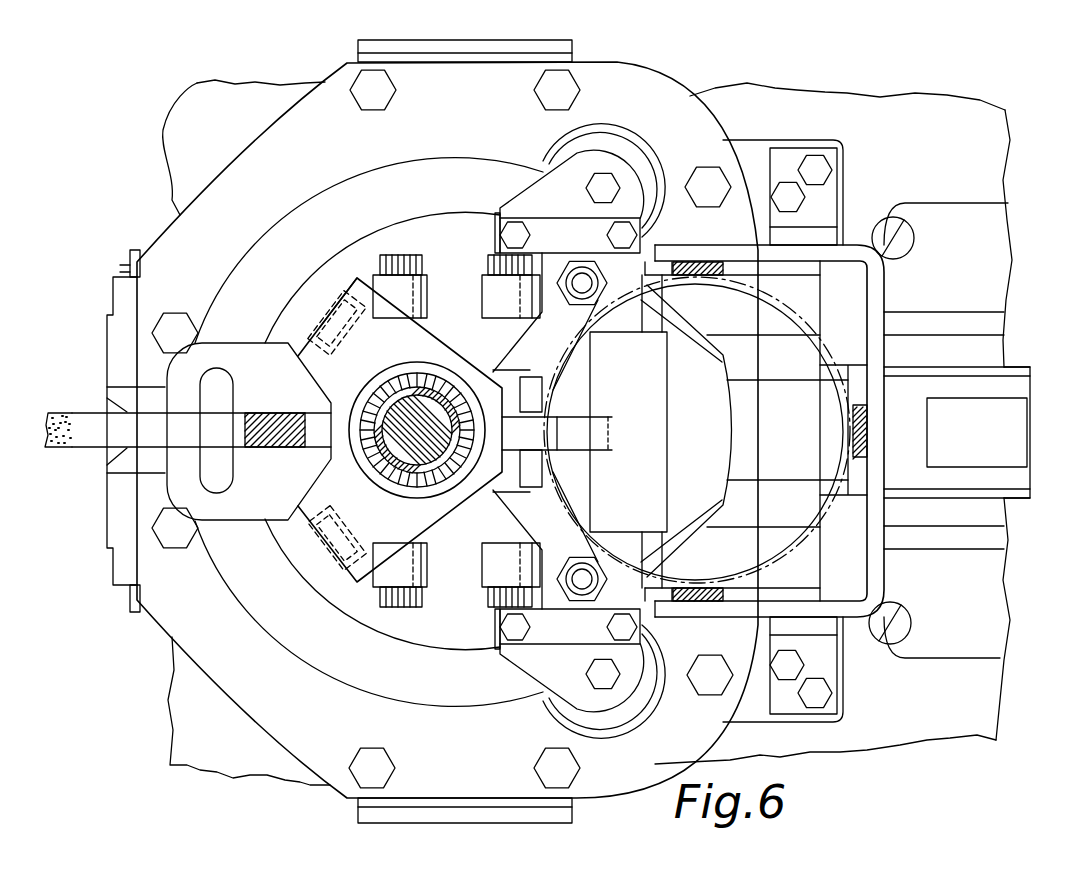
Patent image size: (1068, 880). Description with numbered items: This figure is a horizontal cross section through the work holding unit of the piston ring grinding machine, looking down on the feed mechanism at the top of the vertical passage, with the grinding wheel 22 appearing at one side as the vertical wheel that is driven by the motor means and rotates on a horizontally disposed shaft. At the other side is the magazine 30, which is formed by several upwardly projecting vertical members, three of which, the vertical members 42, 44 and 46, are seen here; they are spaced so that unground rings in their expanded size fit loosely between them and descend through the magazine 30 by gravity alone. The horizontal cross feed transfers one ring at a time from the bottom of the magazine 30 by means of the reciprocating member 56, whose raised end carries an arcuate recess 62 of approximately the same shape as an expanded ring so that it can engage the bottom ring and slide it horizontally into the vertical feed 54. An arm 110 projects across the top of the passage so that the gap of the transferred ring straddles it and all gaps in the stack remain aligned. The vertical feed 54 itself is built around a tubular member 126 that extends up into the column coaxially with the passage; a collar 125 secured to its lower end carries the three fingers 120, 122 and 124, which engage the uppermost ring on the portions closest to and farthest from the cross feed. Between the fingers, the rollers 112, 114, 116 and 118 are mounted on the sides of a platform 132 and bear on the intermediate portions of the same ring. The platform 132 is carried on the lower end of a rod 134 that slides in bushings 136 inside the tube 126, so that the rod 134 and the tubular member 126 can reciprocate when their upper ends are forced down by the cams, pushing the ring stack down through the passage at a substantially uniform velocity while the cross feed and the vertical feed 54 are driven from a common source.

The grinding wheel 22 is at (58, 440).
The arm 110 is at (279, 447).
The finger 122 is at (352, 304).
The finger 124 is at (360, 568).
The collar 125 is at (362, 300).
The roller 114 is at (418, 266).
The roller 112 is at (492, 280).
The roller 118 is at (424, 562).
The roller 116 is at (484, 563).
The platform 132 is at (478, 333).
The tubular member 126 is at (407, 480).
The bushings 136 is at (377, 450).
The rod 134 is at (404, 397).
The finger 120 is at (600, 442).
The vertical member 42 is at (695, 268).
The vertical member 44 is at (695, 594).
The arcuate recess 62 is at (850, 436).
The vertical member 46 is at (858, 416).
The magazine 30 is at (889, 561).
The member 56 is at (1006, 482).
The vertical feed 54 is at (513, 677).